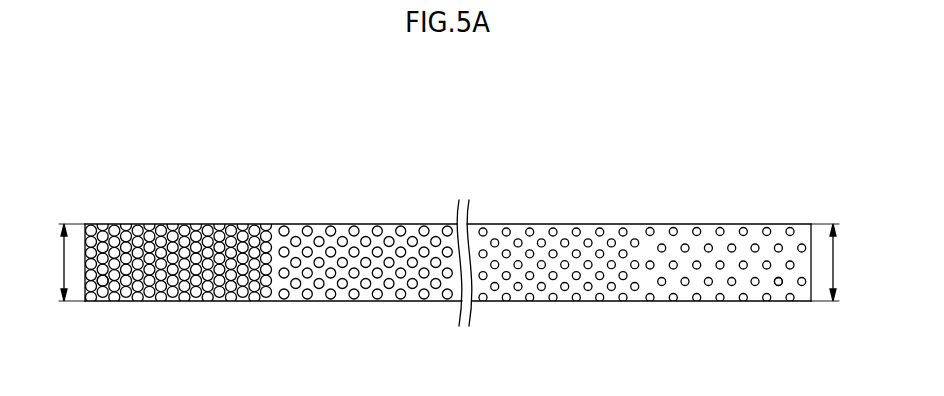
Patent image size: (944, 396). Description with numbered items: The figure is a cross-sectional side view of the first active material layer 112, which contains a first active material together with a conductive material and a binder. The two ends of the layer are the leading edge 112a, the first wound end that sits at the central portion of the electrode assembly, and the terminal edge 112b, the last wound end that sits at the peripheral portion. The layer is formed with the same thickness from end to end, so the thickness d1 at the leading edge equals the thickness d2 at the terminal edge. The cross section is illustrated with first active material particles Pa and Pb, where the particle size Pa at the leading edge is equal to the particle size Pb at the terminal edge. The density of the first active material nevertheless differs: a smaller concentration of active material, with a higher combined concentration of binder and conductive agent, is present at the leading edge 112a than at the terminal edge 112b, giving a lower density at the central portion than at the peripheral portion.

The first active material layer 112 is at (61, 109).
The terminal edge 112b is at (85, 213).
The leading edge 112a is at (811, 213).
The first active material particle at the terminal edge Pb is at (102, 286).
The first active material particle at the leading edge Pa is at (780, 286).
The thickness at the leading edge d1 is at (835, 262).
The thickness at the terminal edge d2 is at (62, 262).